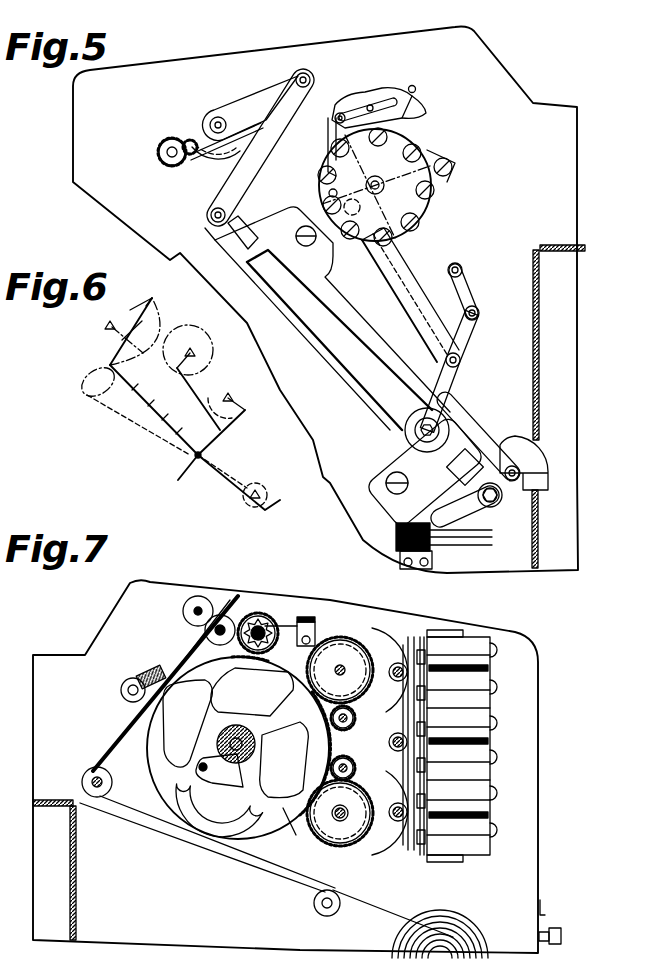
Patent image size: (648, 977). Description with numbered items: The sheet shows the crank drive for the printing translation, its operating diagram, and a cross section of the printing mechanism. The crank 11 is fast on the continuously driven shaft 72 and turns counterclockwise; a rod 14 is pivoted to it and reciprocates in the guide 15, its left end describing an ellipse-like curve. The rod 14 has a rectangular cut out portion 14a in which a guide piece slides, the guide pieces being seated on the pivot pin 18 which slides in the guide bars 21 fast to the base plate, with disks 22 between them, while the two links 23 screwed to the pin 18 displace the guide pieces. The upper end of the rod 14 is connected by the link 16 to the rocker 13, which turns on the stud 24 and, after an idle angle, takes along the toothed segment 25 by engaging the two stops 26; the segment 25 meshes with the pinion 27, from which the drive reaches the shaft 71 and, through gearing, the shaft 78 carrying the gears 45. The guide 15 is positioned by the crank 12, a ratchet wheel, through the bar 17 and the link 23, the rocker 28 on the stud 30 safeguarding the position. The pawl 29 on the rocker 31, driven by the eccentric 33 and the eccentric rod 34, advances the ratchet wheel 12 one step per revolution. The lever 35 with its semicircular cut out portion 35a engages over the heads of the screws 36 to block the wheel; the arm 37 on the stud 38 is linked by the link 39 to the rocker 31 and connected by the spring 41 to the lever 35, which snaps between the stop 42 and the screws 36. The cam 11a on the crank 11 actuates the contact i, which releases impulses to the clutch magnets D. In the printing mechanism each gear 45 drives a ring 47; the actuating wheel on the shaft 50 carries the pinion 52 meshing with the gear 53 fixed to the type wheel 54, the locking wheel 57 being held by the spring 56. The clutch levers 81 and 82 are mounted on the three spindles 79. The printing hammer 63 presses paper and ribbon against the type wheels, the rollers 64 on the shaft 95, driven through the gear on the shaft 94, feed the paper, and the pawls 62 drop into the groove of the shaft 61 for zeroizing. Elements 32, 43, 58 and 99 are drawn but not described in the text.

In FIG. 5, the crank 11 is at (535, 460).
In FIG. 6, the crank 11 is at (273, 512).
In FIG. 5, the cam 11a is at (478, 518).
In FIG. 5, the crank 12 is at (414, 208).
In FIG. 6, the crank 12 is at (180, 363).
In FIG. 5, the rocker 13 is at (254, 105).
In FIG. 6, the rocker 13 is at (130, 310).
In FIG. 5, the rod 14 is at (468, 493).
In FIG. 6, the rod 14 is at (133, 390).
In FIG. 5, the rectangular cut out portion 14a is at (240, 236).
In FIG. 6, the guide 15 is at (182, 477).
In FIG. 5, the link 16 is at (270, 130).
In FIG. 6, the link 16 is at (142, 321).
In FIG. 5, the bar 17 is at (407, 257).
In FIG. 6, the bar 17 is at (193, 395).
In FIG. 5, the pivot pin 18 is at (405, 431).
In FIG. 5, the guide bars 21 is at (353, 373).
In FIG. 5, the disks 22 is at (413, 441).
In FIG. 5, the links 23 is at (461, 342).
In FIG. 6, the links 23 is at (215, 440).
In FIG. 5, the stud 24 is at (218, 118).
In FIG. 5, the toothed segment 25 is at (217, 156).
In FIG. 5, the stops 26 is at (197, 153).
In FIG. 5, the pinion 27 is at (171, 142).
In FIG. 5, the rocker 28 is at (479, 292).
In FIG. 6, the rocker 28 is at (245, 410).
In FIG. 5, the pawl 29 is at (432, 153).
In FIG. 5, the stud 30 is at (462, 270).
In FIG. 5, the rocker 31 is at (400, 179).
In FIG. 5, the screw 32 is at (452, 160).
In FIG. 5, the eccentric 33 is at (522, 502).
In FIG. 5, the eccentric rod 34 is at (463, 410).
In FIG. 5, the lever 35 is at (390, 92).
In FIG. 5, the semicircular cut out portion 35a is at (415, 107).
In FIG. 5, the screws 36 is at (419, 224).
In FIG. 5, the arm 37 is at (340, 112).
In FIG. 5, the stud 38 is at (365, 100).
In FIG. 5, the link 39 is at (338, 132).
In FIG. 5, the spring 41 is at (370, 104).
In FIG. 5, the stop 42 is at (416, 89).
In FIG. 5, the screw 43 is at (386, 128).
In FIG. 7, the gears 45 is at (332, 766).
In FIG. 7, the ring 47 is at (345, 830).
In FIG. 7, the shaft 50 is at (340, 665).
In FIG. 7, the pinion 52 is at (338, 820).
In FIG. 7, the gear 53 is at (291, 822).
In FIG. 7, the type wheel 54 is at (205, 823).
In FIG. 7, the spring 56 is at (304, 620).
In FIG. 7, the locking wheel 57 is at (257, 627).
In FIG. 7, the pinion 58 is at (266, 628).
In FIG. 7, the shaft 61 is at (240, 735).
In FIG. 7, the pawls 62 is at (214, 762).
In FIG. 7, the printing hammer 63 is at (147, 670).
In FIG. 7, the rollers 64 is at (212, 626).
In FIG. 5, the shaft 71 is at (168, 150).
In FIG. 5, the shaft 72 is at (519, 474).
In FIG. 7, the shaft 78 is at (347, 766).
In FIG. 7, the spindles 79 is at (407, 820).
In FIG. 7, the lever 81 is at (396, 665).
In FIG. 7, the levers 82 is at (425, 775).
In FIG. 7, the shaft 94 is at (220, 624).
In FIG. 7, the shaft 95 is at (183, 611).
In FIG. 7, the screw 99 is at (121, 690).
In FIG. 7, the clutch magnets D is at (473, 657).
In FIG. 5, the contact i is at (480, 540).